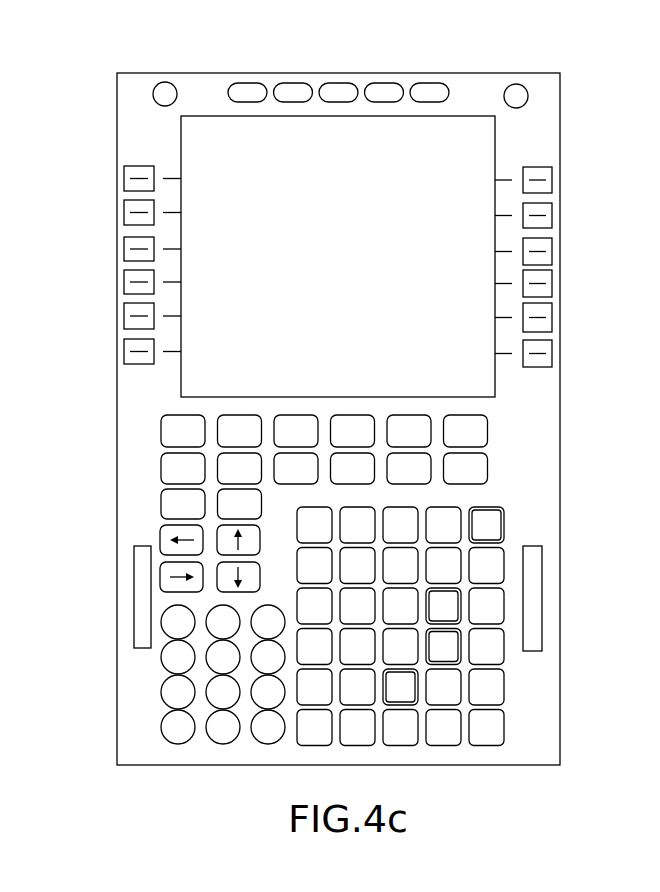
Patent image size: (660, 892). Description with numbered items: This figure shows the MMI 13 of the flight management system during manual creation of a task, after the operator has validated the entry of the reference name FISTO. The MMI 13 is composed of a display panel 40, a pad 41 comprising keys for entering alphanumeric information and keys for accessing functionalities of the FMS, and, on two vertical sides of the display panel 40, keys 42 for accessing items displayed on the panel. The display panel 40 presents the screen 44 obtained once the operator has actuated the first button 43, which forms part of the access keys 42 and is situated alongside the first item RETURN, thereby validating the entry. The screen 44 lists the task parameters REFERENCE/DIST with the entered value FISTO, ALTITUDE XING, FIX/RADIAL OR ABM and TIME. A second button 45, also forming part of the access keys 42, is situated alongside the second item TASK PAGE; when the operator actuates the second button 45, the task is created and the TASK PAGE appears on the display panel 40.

The MMI 13 is at (502, 765).
The display panel 40 is at (462, 115).
The pad 41 is at (108, 403).
The keys 42 is at (108, 150).
The first button 43 is at (127, 356).
The screen 44 is at (458, 156).
The second button 45 is at (543, 358).